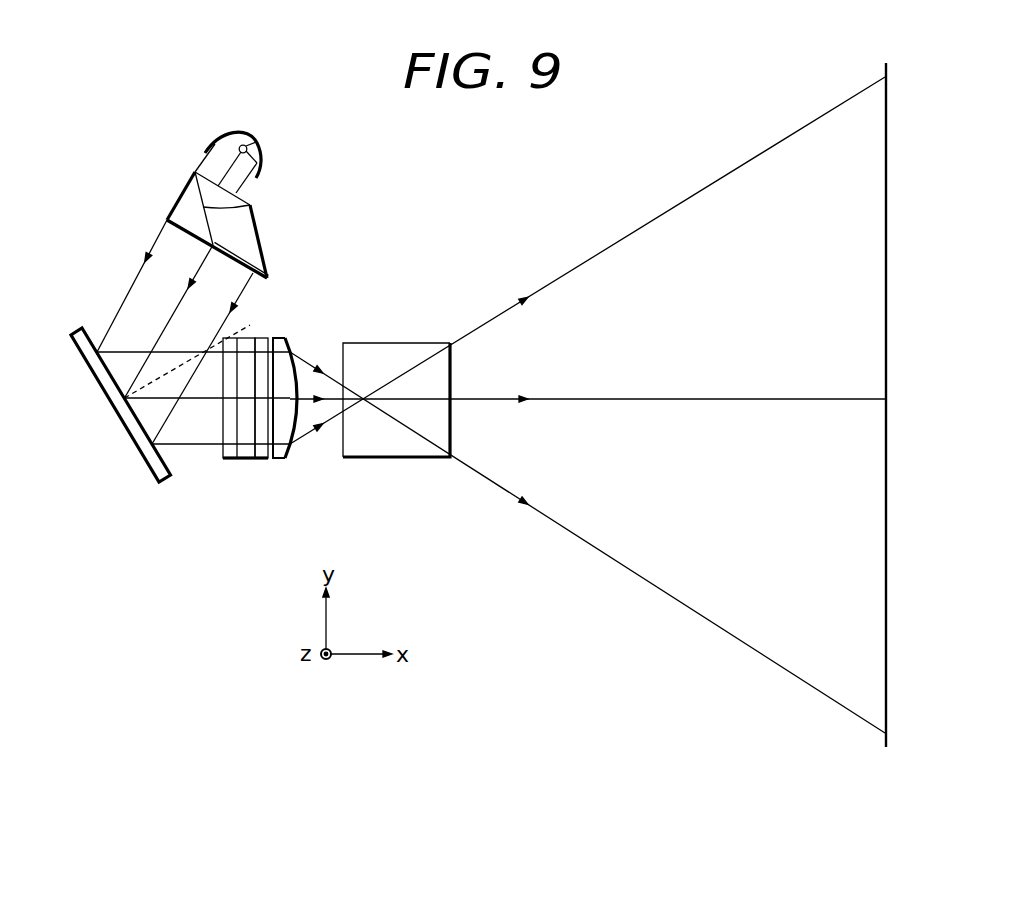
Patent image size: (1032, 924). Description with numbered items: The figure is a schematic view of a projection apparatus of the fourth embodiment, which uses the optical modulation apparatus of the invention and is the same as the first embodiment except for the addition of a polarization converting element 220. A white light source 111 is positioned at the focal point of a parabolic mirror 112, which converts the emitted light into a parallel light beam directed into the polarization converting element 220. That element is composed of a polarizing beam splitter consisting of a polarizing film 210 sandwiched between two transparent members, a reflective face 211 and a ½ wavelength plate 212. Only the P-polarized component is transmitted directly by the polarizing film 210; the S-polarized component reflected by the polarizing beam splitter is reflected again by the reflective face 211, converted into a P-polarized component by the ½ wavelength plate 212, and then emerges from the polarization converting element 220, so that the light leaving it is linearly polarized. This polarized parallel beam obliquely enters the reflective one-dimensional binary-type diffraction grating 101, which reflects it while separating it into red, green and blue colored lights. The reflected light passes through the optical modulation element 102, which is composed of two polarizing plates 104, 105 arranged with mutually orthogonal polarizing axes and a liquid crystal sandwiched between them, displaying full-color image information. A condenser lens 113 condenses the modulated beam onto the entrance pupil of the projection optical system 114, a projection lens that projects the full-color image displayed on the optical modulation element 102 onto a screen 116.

The reflective one-dimensional binary-type diffraction grating 101 is at (76, 331).
The optical modulation element 102 is at (215, 458).
The polarizing plate 104 is at (227, 456).
The polarizing plate 105 is at (260, 456).
The white light source 111 is at (257, 142).
The parabolic mirror 112 is at (238, 133).
The condenser lens 113 is at (275, 459).
The projection optical system 114 is at (412, 447).
The screen 116 is at (887, 720).
The polarizing film 210 is at (250, 206).
The reflective face 211 is at (260, 246).
The ½ wavelength plate 212 is at (238, 267).
The polarization converting element 220 is at (283, 243).